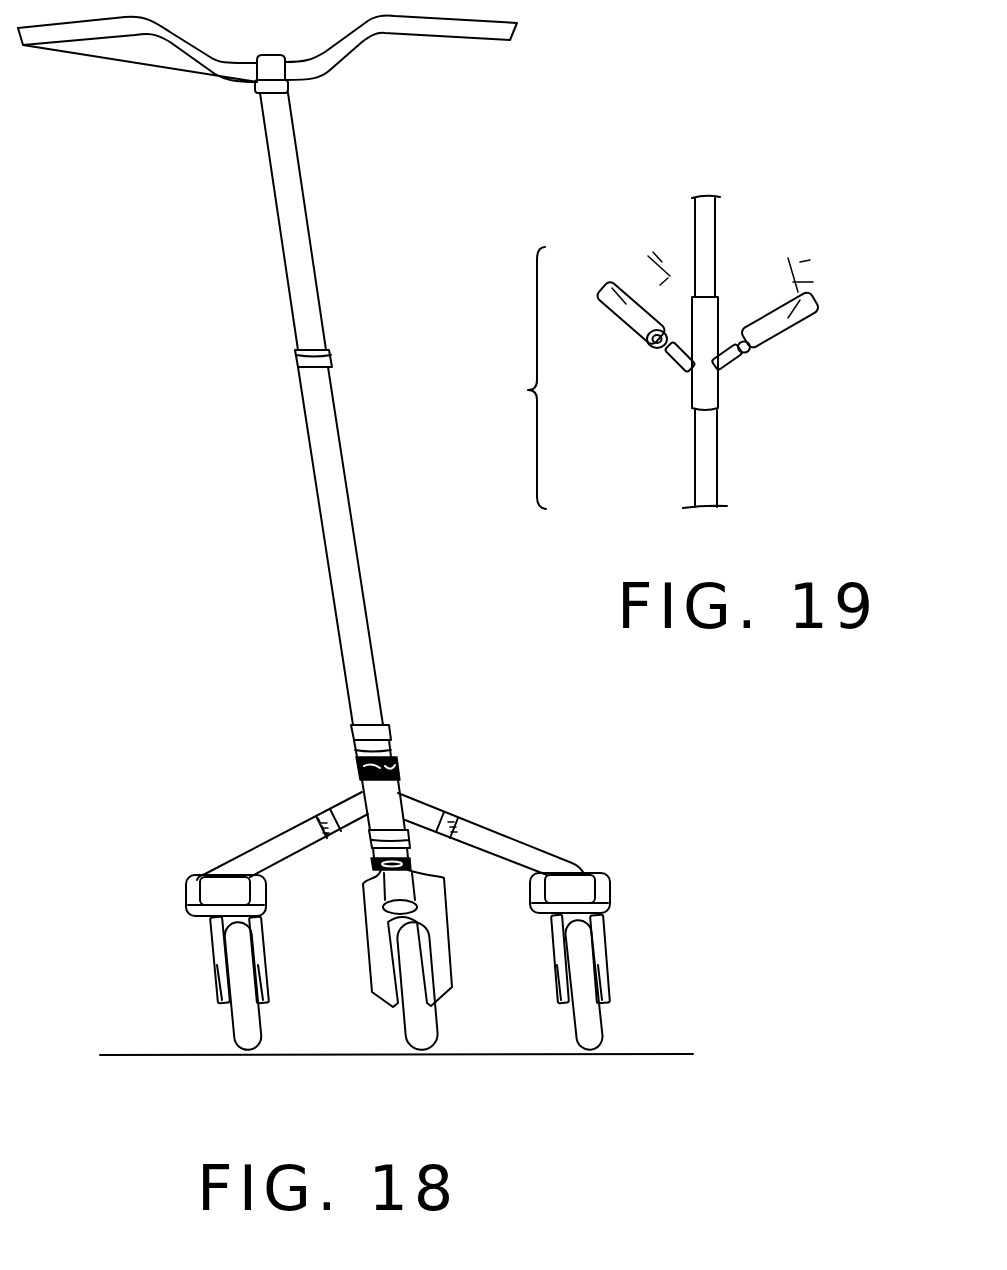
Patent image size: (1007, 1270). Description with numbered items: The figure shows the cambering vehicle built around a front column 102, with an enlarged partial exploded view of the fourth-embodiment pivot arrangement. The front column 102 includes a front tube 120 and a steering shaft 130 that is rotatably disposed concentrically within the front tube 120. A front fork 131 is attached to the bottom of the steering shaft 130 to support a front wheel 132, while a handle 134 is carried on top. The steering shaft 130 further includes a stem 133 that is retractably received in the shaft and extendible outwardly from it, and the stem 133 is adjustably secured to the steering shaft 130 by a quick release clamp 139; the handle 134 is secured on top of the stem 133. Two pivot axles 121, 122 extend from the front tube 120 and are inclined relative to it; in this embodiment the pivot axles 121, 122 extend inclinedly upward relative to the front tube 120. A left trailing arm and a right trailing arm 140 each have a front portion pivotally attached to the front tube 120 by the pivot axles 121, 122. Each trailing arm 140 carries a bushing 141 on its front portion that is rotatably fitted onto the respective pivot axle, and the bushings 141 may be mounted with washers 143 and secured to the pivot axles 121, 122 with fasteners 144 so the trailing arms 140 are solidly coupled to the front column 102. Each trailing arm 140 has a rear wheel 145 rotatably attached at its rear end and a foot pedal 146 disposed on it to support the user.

In FIG. 18, the front column 102 is at (285, 748).
In FIG. 18, the front tube 120 is at (357, 752).
In FIG. 19, the front tube 120 is at (720, 313).
In FIG. 19, the pivot axle 121 is at (727, 363).
In FIG. 19, the pivot axle 122 is at (673, 363).
In FIG. 18, the steering shaft 130 is at (342, 475).
In FIG. 19, the steering shaft 130 is at (710, 232).
In FIG. 18, the front fork 131 is at (438, 927).
In FIG. 18, the front wheel 132 is at (423, 1033).
In FIG. 18, the stem 133 is at (308, 246).
In FIG. 18, the handle 134 is at (455, 30).
In FIG. 18, the quick release clamp 139 is at (297, 355).
In FIG. 18, the trailing arm 140 is at (250, 858).
In FIG. 19, the trailing arm 140 is at (640, 278).
In FIG. 18, the bushing 141 is at (342, 813).
In FIG. 19, the bushing 141 is at (620, 320).
In FIG. 18, the washer 143 is at (313, 817).
In FIG. 18, the fastener 144 is at (307, 832).
In FIG. 18, the rear wheel 145 is at (247, 1032).
In FIG. 18, the foot pedal 146 is at (193, 892).